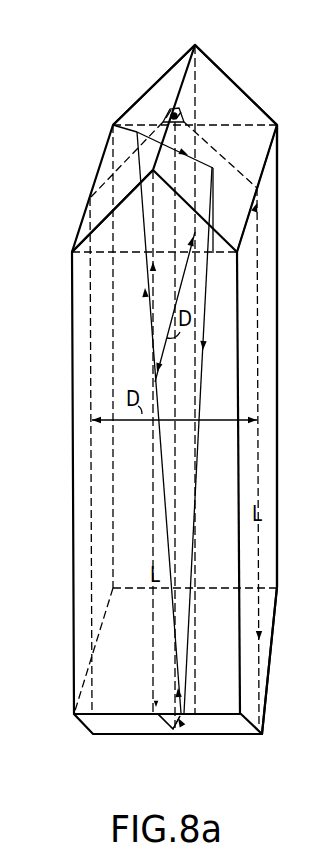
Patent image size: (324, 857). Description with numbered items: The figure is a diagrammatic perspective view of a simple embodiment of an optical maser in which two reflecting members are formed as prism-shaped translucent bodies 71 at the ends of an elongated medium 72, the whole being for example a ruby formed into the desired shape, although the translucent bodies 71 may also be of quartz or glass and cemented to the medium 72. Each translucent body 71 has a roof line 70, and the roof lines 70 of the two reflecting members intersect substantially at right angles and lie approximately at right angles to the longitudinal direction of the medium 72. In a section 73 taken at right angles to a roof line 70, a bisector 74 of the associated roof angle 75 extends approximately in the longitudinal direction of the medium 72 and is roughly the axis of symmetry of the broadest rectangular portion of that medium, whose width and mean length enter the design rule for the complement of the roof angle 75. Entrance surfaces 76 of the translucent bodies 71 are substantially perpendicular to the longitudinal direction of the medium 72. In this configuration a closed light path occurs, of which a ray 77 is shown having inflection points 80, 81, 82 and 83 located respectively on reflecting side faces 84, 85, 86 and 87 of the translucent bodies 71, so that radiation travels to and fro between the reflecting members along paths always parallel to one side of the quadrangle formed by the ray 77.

The roof line 70 is at (181, 82).
The translucent body 71 is at (240, 89).
The medium 72 is at (236, 461).
The section 73 is at (258, 287).
The bisector 74 is at (175, 370).
The roof angle 75 is at (183, 107).
The entrance surface 76 is at (258, 181).
The ray 77 is at (200, 403).
The inflection point 80 is at (190, 722).
The inflection point 81 is at (176, 657).
The inflection point 82 is at (137, 132).
The inflection point 83 is at (213, 168).
The reflecting side face 84 is at (233, 723).
The reflecting side face 85 is at (132, 617).
The reflecting side face 86 is at (153, 100).
The reflecting side face 87 is at (242, 113).